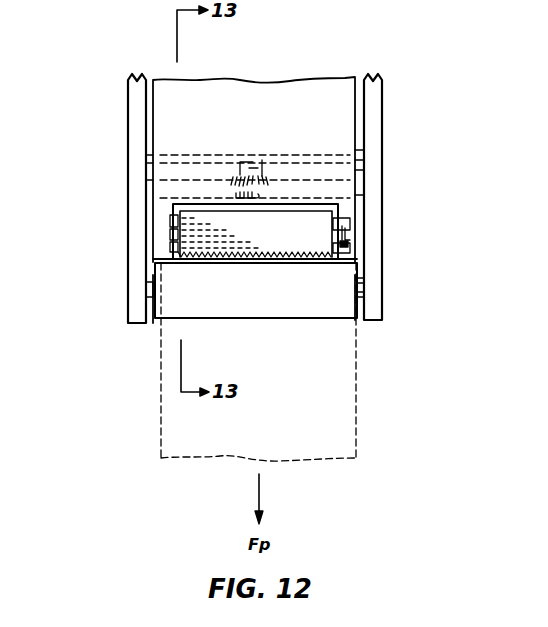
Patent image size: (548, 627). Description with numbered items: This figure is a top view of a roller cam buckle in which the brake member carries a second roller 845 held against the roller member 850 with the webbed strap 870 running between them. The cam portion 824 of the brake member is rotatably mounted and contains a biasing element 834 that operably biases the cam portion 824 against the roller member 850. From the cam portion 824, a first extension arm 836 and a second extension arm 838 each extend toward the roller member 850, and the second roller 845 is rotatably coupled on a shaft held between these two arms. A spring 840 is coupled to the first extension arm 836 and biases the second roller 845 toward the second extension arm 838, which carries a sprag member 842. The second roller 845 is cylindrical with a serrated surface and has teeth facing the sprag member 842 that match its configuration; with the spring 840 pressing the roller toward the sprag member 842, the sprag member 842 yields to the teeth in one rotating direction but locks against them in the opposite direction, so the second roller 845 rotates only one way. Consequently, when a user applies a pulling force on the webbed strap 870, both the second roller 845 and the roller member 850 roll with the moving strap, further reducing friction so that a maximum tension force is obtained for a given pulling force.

The cam portion 824 is at (330, 184).
The biasing element 834 is at (253, 153).
The first extension arm 836 is at (348, 210).
The second extension arm 838 is at (163, 209).
The spring 840 is at (350, 243).
The sprag member 842 is at (176, 247).
The second roller 845 is at (300, 238).
The roller member 850 is at (362, 327).
The webbed strap 870 is at (330, 419).